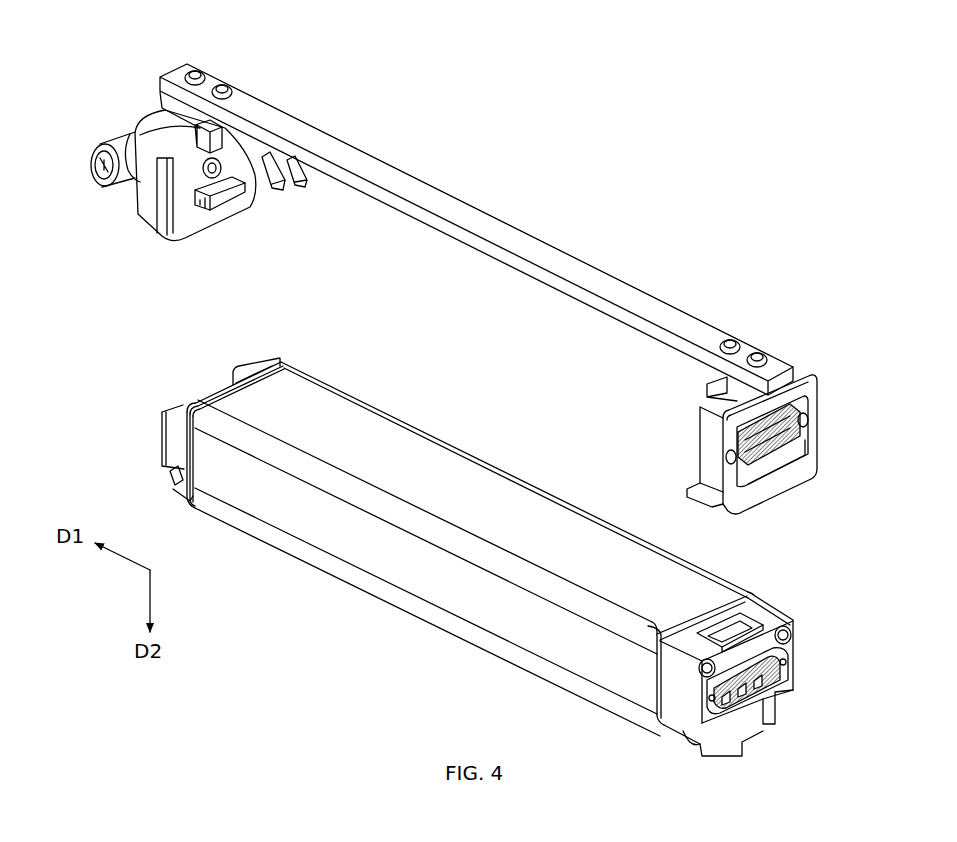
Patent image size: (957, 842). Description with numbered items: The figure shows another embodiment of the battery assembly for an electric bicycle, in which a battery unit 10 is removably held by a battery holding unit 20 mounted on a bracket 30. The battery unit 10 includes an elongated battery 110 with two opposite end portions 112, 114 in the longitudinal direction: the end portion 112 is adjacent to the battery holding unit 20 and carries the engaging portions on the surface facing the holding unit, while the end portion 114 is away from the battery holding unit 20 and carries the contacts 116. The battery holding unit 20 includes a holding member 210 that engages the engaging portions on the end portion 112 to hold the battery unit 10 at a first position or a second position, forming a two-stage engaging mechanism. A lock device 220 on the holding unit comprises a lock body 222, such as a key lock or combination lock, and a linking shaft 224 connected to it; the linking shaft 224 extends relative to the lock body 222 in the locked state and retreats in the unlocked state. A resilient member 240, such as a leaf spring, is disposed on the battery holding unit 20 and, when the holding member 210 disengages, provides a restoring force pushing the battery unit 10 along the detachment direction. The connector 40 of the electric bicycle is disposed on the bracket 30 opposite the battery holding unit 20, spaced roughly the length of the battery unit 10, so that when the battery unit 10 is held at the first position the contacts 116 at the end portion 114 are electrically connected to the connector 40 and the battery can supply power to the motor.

The battery unit 10 is at (318, 590).
The battery 110 is at (458, 600).
The end portion 112 is at (258, 366).
The end portion 114 is at (762, 612).
The contacts 116 is at (792, 686).
The battery holding unit 20 is at (146, 104).
The holding member 210 is at (228, 198).
The lock device 220 is at (150, 137).
The lock body 222 is at (97, 180).
The linking shaft 224 is at (225, 178).
The resilient member 240 is at (290, 175).
The bracket 30 is at (632, 300).
The connector 40 is at (818, 398).